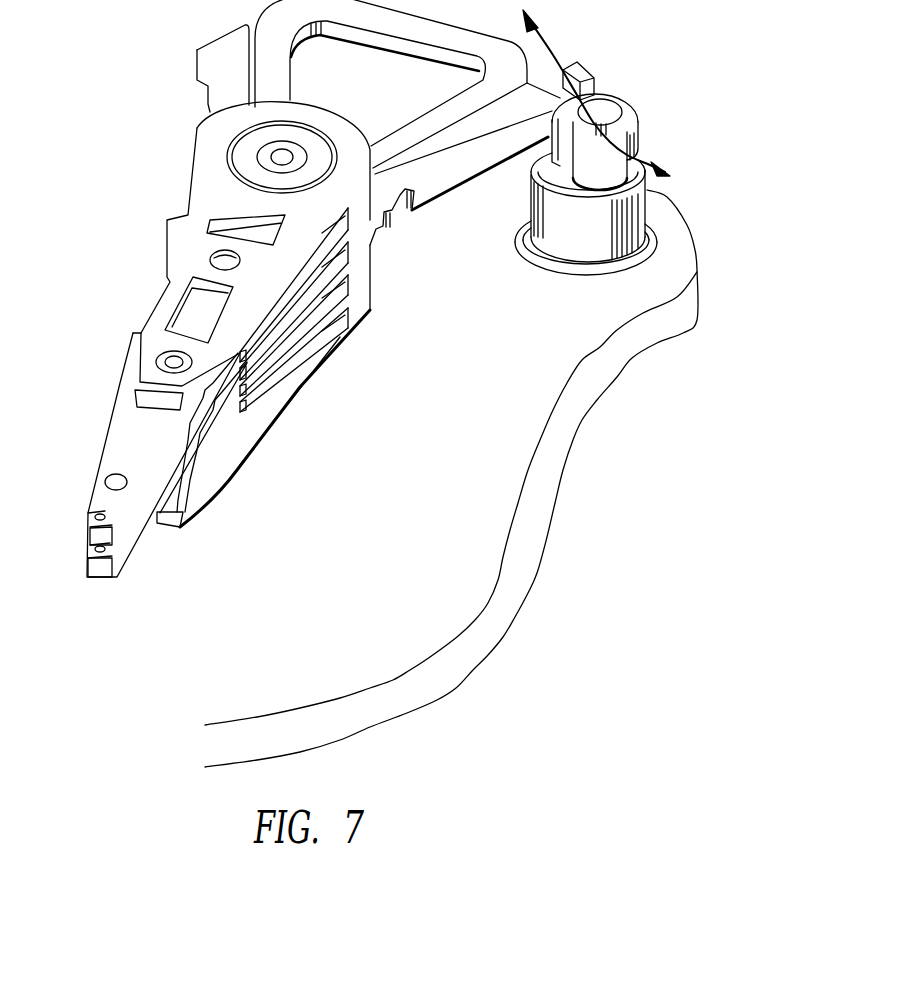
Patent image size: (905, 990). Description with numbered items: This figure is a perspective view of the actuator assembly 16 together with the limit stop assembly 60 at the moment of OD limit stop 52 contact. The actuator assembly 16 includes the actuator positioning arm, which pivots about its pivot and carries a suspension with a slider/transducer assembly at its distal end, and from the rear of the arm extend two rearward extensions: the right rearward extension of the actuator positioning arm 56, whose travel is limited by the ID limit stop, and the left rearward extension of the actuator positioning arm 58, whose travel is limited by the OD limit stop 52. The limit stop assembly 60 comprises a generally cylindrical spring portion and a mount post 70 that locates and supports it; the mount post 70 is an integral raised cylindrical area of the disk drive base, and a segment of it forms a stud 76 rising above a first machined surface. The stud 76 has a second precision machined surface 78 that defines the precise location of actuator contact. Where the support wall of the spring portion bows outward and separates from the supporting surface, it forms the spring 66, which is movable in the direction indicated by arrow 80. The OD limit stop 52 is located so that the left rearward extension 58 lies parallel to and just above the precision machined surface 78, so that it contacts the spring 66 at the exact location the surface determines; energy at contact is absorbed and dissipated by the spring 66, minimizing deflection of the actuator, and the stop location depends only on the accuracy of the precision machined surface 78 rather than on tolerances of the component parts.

The actuator assembly 16 is at (303, 288).
The OD limit stop 52 is at (655, 280).
The right rearward extension of the actuator positioning arm 56 is at (197, 63).
The left rearward extension of the actuator positioning arm 58 is at (583, 70).
The limit stop assembly 60 is at (629, 151).
The spring 66 is at (597, 93).
The mount post 70 is at (647, 203).
The stud 76 is at (538, 153).
The precision machined surface 78 is at (537, 168).
The arrow 80 is at (543, 80).